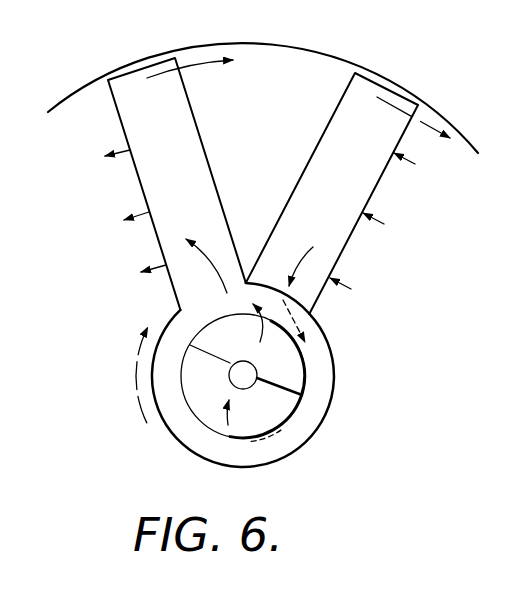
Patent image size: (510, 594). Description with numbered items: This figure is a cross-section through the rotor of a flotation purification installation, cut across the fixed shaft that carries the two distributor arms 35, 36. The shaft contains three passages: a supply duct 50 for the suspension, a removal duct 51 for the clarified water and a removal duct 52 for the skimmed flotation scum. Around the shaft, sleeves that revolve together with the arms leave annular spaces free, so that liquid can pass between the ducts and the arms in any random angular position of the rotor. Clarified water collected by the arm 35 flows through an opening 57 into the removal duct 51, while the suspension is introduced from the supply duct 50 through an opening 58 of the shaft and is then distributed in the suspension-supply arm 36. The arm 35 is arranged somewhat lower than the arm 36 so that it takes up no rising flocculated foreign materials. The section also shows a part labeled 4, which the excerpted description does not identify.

The housing wall 4 is at (325, 56).
The distributor arm 35 is at (311, 158).
The distributor arm 36 is at (182, 106).
The supply duct 50 is at (300, 372).
The removal duct 51 is at (285, 412).
The removal duct 52 is at (238, 378).
The opening 57 is at (212, 423).
The opening 58 is at (273, 320).